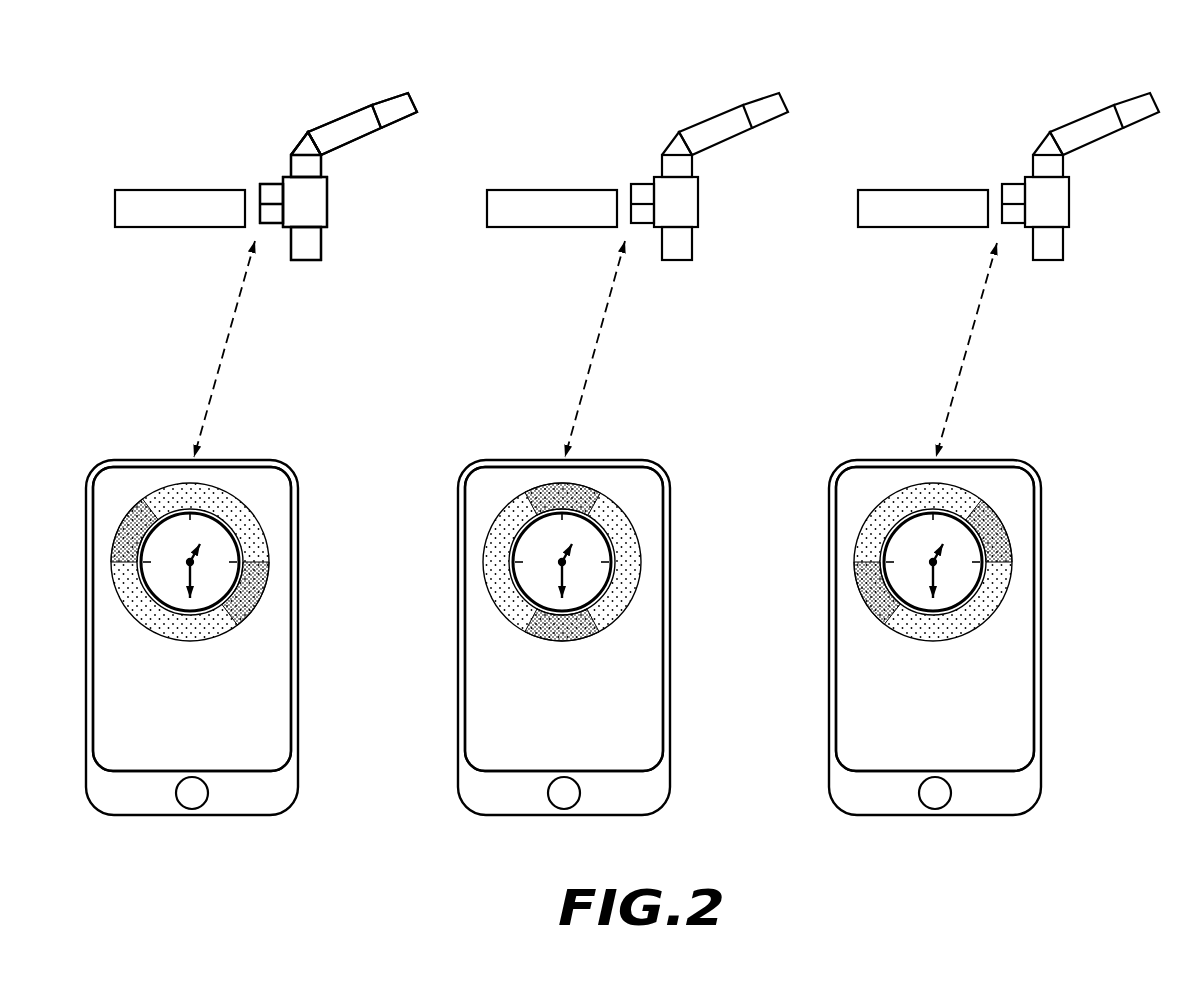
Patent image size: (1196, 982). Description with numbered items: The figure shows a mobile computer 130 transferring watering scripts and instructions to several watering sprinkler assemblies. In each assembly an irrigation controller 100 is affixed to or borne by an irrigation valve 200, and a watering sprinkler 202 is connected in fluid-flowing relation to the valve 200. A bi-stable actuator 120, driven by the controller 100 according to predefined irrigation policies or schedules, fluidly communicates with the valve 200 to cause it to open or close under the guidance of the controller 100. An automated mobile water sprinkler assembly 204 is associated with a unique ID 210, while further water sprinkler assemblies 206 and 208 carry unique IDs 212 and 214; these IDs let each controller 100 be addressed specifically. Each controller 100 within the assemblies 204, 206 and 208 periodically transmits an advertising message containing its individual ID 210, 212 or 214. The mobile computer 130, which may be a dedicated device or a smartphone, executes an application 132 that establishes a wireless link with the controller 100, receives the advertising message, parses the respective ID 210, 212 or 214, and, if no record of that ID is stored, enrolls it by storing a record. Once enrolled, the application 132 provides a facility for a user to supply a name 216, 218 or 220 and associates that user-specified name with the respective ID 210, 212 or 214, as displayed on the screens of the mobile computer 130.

The irrigation controller 100 is at (260, 188).
The bi-stable actuator 120 is at (273, 225).
The mobile computer 130 is at (263, 456).
The application 132 is at (273, 489).
The irrigation valve 200 is at (327, 203).
The watering sprinkler 202 is at (376, 132).
The automated mobile water sprinkler assembly 204 is at (366, 91).
The water sprinkler assembly 206 is at (737, 89).
The water sprinkler assembly 208 is at (1108, 91).
The unique ID 210 is at (170, 189).
The unique ID 212 is at (542, 189).
The unique ID 214 is at (913, 189).
The name 216 is at (265, 688).
The name 218 is at (637, 688).
The name 220 is at (1008, 688).